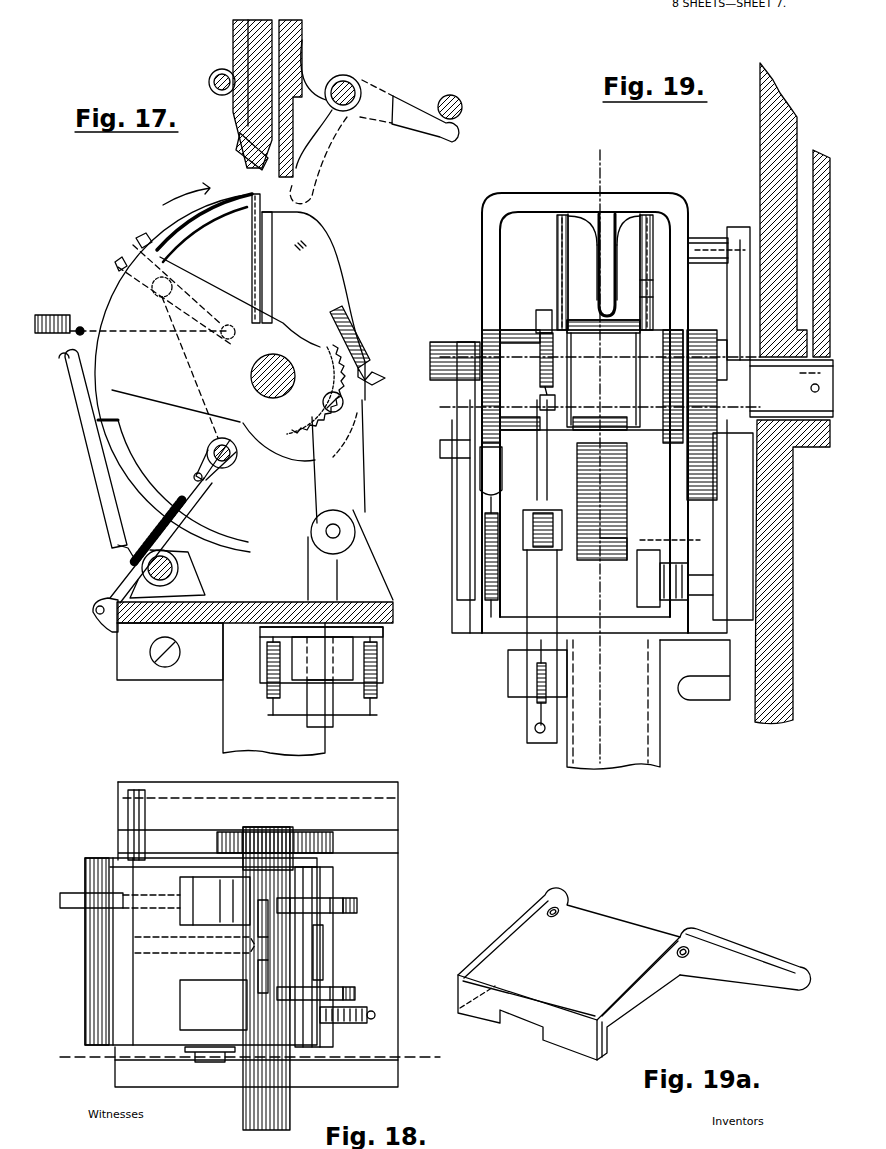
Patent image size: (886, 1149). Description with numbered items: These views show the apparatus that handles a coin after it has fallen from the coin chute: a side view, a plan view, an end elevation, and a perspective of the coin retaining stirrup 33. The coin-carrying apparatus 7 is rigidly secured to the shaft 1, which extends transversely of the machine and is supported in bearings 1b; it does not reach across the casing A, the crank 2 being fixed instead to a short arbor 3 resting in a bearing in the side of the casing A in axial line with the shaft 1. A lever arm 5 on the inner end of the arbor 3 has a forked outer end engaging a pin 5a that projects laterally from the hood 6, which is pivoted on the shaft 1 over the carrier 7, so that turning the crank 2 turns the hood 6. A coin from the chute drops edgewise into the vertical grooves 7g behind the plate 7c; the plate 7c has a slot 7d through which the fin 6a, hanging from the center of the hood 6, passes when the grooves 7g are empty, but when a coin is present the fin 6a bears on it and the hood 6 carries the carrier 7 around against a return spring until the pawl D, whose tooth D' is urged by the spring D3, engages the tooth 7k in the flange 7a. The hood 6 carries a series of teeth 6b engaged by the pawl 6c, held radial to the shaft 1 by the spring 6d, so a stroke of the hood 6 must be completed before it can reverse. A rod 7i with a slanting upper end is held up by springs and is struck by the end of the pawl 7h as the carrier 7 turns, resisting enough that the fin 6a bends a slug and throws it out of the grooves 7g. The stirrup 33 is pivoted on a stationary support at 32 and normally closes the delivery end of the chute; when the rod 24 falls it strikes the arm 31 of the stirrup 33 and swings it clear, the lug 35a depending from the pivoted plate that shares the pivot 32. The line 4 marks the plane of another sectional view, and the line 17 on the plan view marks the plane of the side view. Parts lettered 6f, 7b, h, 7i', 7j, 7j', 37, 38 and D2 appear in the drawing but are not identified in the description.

In FIG. 17, the shaft 1 is at (258, 360).
In FIG. 19, the shaft 1 is at (725, 420).
In FIG. 18, the shaft 1 is at (288, 828).
In FIG. 19, the bearings 1b is at (459, 340).
In FIG. 18, the bearings 1b is at (358, 1097).
In FIG. 19, the crank 2 is at (820, 148).
In FIG. 19, the arbor or short shaft 3 is at (791, 388).
In FIG. 19, the section lines 4 is at (610, 454).
In FIG. 17, the lever arm 5 is at (118, 266).
In FIG. 19, the lever arm 5 is at (727, 305).
In FIG. 17, the pin 5a is at (135, 357).
In FIG. 19, the pin 5a is at (706, 238).
In FIG. 18, the pin 5a is at (138, 790).
In FIG. 17, the hood 6 is at (106, 286).
In FIG. 19, the hood 6 is at (500, 195).
In FIG. 18, the hood 6 is at (210, 858).
In FIG. 17, the fin 6a is at (241, 258).
In FIG. 19, the fin 6a is at (604, 212).
In FIG. 17, the series of teeth 6b is at (322, 401).
In FIG. 18, the series of teeth 6b is at (320, 1045).
In FIG. 17, the pawl 6c is at (147, 238).
In FIG. 18, the pawl 6c is at (196, 1062).
In FIG. 17, the spring 6d is at (180, 510).
In FIG. 17, the rim segment 6f is at (250, 545).
In FIG. 19, the rim segment 6f is at (602, 501).
In FIG. 18, the rim segment 6f is at (323, 935).
In FIG. 17, the coin-carrying apparatus 7 is at (304, 336).
In FIG. 19, the coin-carrying apparatus 7 is at (595, 410).
In FIG. 18, the coin-carrying apparatus 7 is at (322, 953).
In FIG. 19, the flange 7a is at (583, 379).
In FIG. 18, the flange 7a is at (355, 987).
In FIG. 19, the bar 7b is at (625, 379).
In FIG. 18, the bar 7b is at (352, 898).
In FIG. 17, the plate 7c is at (272, 232).
In FIG. 19, the plate 7c is at (578, 262).
In FIG. 18, the plate 7c is at (268, 958).
In FIG. 19, the slot 7d is at (564, 358).
In FIG. 17, the vertical grooves 7g is at (272, 290).
In FIG. 19, the vertical grooves 7g is at (560, 213).
In FIG. 18, the vertical grooves 7g is at (263, 910).
In FIG. 17, the pawl 7h is at (340, 486).
In FIG. 19, the pawl 7h is at (563, 525).
In FIG. 17, the spring bar h is at (368, 345).
In FIG. 17, the rod 7i is at (350, 555).
In FIG. 19, the rod 7i' is at (559, 571).
In FIG. 17, the spring 7j is at (308, 676).
In FIG. 17, the spring 7j' is at (390, 676).
In FIG. 19, the spring 7j' is at (569, 682).
In FIG. 19, the tooth 7k is at (645, 296).
In FIG. 18, the tooth 7k is at (357, 903).
In FIG. 18, the section line 17 is at (250, 1056).
In FIG. 17, the rod 24 is at (458, 97).
In FIG. 17, the arm 31 is at (409, 108).
In FIG. 19a, the arm 31 is at (704, 994).
In FIG. 17, the pivot 32 is at (352, 79).
In FIG. 17, the stirrup 33 is at (236, 152).
In FIG. 19a, the stirrup 33 is at (569, 974).
In FIG. 17, the lug 35a is at (305, 183).
In FIG. 17, the block 37 is at (232, 46).
In FIG. 17, the screw 38 is at (209, 82).
In FIG. 19, the casing A is at (759, 92).
In FIG. 17, the pawl D is at (93, 449).
In FIG. 19, the pawl D is at (614, 539).
In FIG. 18, the pawl D is at (90, 910).
In FIG. 17, the tooth D' is at (150, 425).
In FIG. 17, the hook D2 is at (123, 545).
In FIG. 17, the spring D3 is at (178, 568).
In FIG. 19, the spring D3 is at (680, 563).